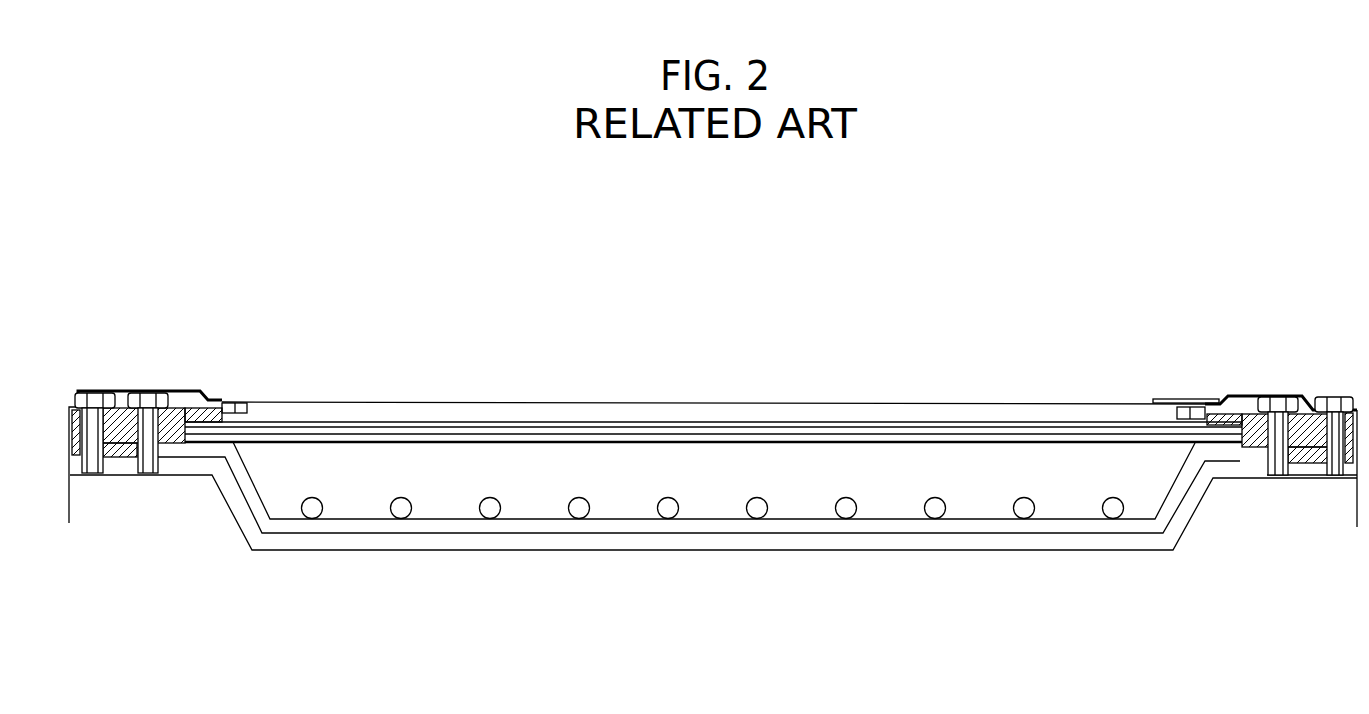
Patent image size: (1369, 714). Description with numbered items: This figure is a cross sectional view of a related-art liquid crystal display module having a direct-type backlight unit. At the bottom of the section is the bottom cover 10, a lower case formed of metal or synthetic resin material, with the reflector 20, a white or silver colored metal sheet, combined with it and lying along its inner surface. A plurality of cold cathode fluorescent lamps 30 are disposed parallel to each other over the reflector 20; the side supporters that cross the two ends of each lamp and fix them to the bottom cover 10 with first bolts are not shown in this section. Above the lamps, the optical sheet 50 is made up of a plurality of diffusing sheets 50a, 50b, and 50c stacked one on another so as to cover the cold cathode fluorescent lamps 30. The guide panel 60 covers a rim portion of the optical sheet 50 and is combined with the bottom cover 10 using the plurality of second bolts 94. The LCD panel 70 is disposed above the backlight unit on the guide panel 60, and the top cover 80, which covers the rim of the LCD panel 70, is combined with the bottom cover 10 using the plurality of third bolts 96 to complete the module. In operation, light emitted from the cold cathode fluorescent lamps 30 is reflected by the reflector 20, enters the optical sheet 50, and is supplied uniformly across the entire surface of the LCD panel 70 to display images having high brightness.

The bottom cover 10 is at (957, 540).
The reflector 20 is at (1029, 527).
The cold cathode fluorescent lamps 30 is at (1113, 513).
The optical sheet 50 is at (713, 366).
The diffusing sheet 50a is at (363, 427).
The diffusing sheet 50b is at (418, 433).
The diffusing sheet 50c is at (367, 334).
The guide panel 60 is at (1257, 414).
The LCD panel 70 is at (1123, 412).
The top cover 80 is at (1193, 407).
The second bolts 94 is at (1280, 410).
The third bolts 96 is at (1338, 403).